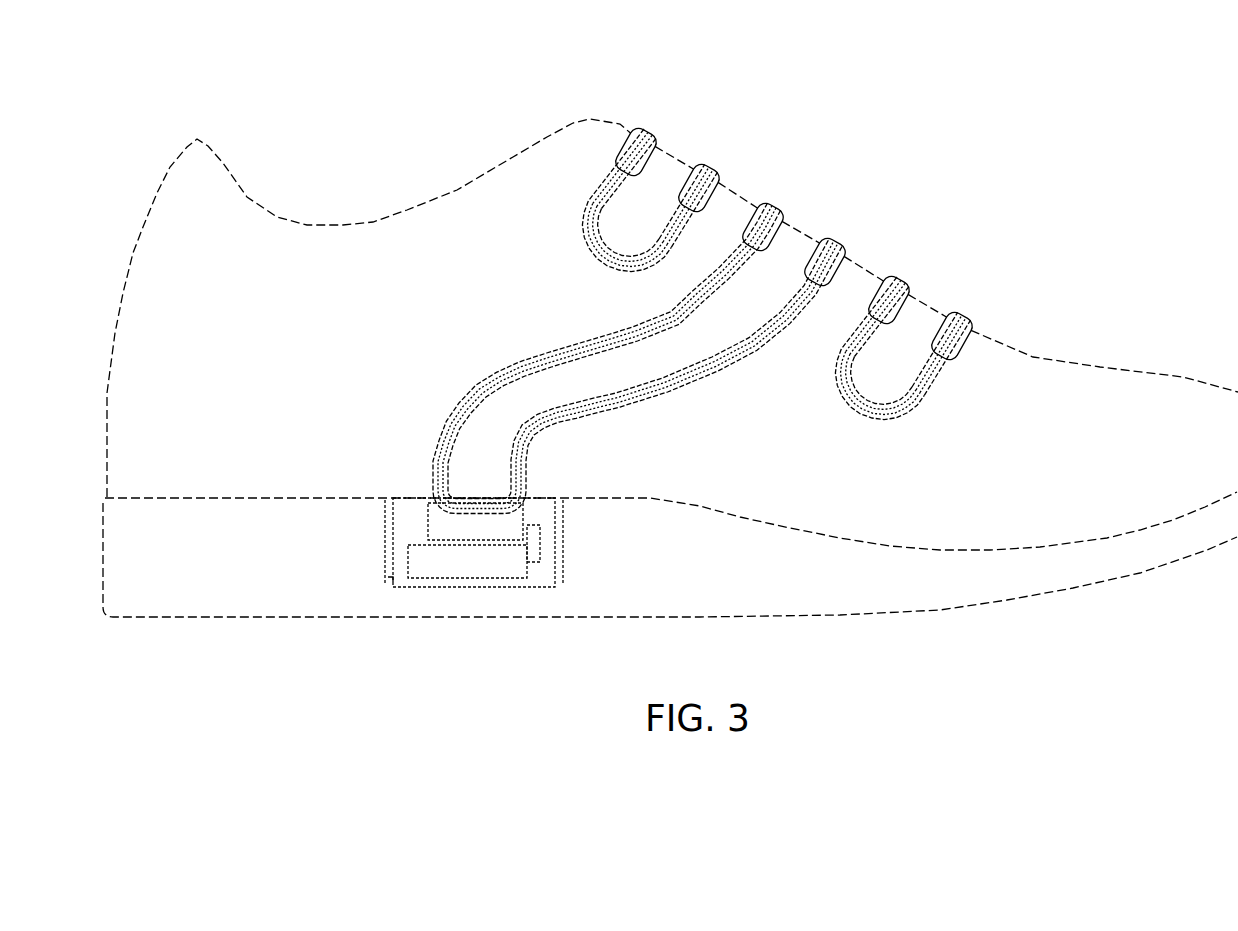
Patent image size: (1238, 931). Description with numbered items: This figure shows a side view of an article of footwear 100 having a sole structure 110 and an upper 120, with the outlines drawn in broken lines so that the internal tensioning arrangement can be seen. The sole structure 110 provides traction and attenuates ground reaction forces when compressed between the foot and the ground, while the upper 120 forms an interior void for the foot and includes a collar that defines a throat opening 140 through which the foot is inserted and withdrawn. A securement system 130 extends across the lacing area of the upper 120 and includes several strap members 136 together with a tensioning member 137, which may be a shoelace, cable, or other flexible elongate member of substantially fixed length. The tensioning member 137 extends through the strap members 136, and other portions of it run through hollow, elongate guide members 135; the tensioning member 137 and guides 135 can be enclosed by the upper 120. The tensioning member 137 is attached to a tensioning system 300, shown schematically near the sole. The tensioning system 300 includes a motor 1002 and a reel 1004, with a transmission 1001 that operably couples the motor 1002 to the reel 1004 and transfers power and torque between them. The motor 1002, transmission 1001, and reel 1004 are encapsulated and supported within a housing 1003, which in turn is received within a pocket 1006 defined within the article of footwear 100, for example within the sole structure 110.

The article of footwear 100 is at (670, 344).
The sole structure 110 is at (1155, 568).
The upper 120 is at (1143, 372).
The securement system 130 is at (721, 291).
The guide member 135 is at (582, 245).
The strap member 136 is at (657, 130).
The tensioning member 137 is at (652, 390).
The throat opening 140 is at (376, 128).
The tensioning system 300 is at (472, 505).
The transmission 1001 is at (542, 548).
The motor 1002 is at (527, 570).
The housing 1003 is at (385, 515).
The reel 1004 is at (527, 512).
The pocket 1006 is at (392, 577).